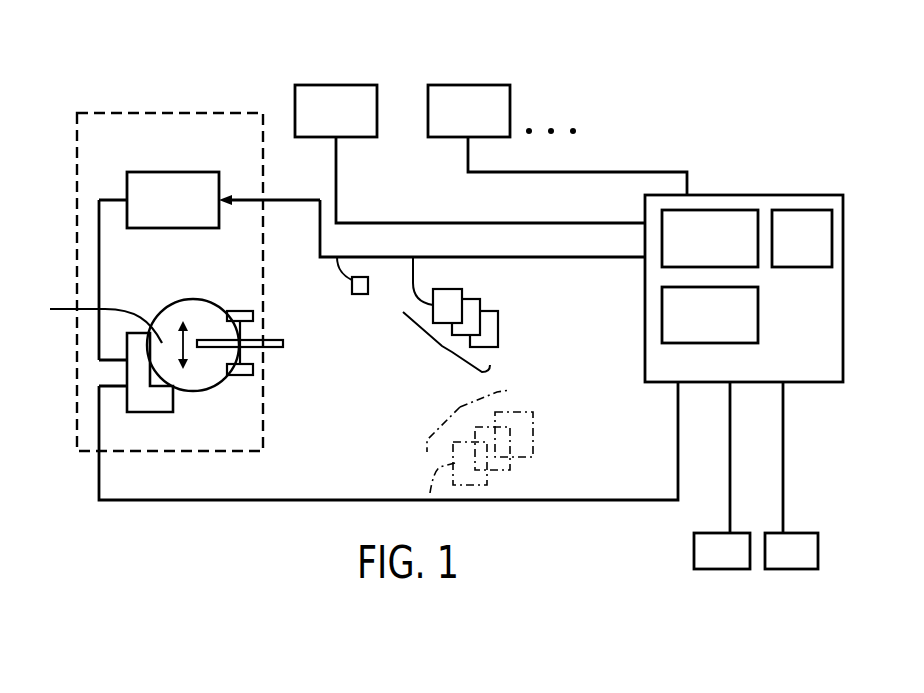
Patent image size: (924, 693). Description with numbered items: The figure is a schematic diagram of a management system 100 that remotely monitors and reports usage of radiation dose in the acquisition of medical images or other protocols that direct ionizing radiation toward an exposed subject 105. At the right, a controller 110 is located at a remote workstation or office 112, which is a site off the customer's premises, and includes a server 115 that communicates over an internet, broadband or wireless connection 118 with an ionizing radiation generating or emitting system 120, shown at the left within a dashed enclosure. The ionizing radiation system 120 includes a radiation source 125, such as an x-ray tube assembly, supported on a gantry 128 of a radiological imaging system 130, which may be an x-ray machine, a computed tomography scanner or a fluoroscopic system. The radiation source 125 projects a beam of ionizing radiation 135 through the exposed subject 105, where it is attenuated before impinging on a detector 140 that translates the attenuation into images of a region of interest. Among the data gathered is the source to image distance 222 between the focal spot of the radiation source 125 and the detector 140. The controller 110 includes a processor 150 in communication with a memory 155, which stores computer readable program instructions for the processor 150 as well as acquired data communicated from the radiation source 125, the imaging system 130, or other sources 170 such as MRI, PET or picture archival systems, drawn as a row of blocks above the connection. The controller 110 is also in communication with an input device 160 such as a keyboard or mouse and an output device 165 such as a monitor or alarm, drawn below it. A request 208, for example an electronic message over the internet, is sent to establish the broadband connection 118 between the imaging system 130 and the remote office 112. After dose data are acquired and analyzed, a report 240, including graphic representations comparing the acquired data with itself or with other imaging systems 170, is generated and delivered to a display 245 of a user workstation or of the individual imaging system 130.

The management system 100 is at (807, 172).
The exposed subject 105 is at (283, 343).
The controller 110 is at (843, 365).
The remote workstation or office 112 is at (622, 293).
The server 115 is at (708, 210).
The broadband connection 118 is at (254, 500).
The ionizing radiation system 120 is at (73, 156).
The radiation source 125 is at (253, 315).
The gantry 128 is at (195, 398).
The radiological imaging system 130 is at (189, 293).
The beam of ionizing radiation 135 is at (253, 363).
The detector 140 is at (236, 376).
The processor 150 is at (710, 343).
The memory 155 is at (800, 267).
The input device 160 is at (720, 569).
The output device 165 is at (792, 569).
The other sources 170 is at (283, 73).
The request 208 is at (368, 285).
The source to image distance 222 is at (86, 341).
The report 240 is at (460, 407).
The display 245 is at (174, 172).